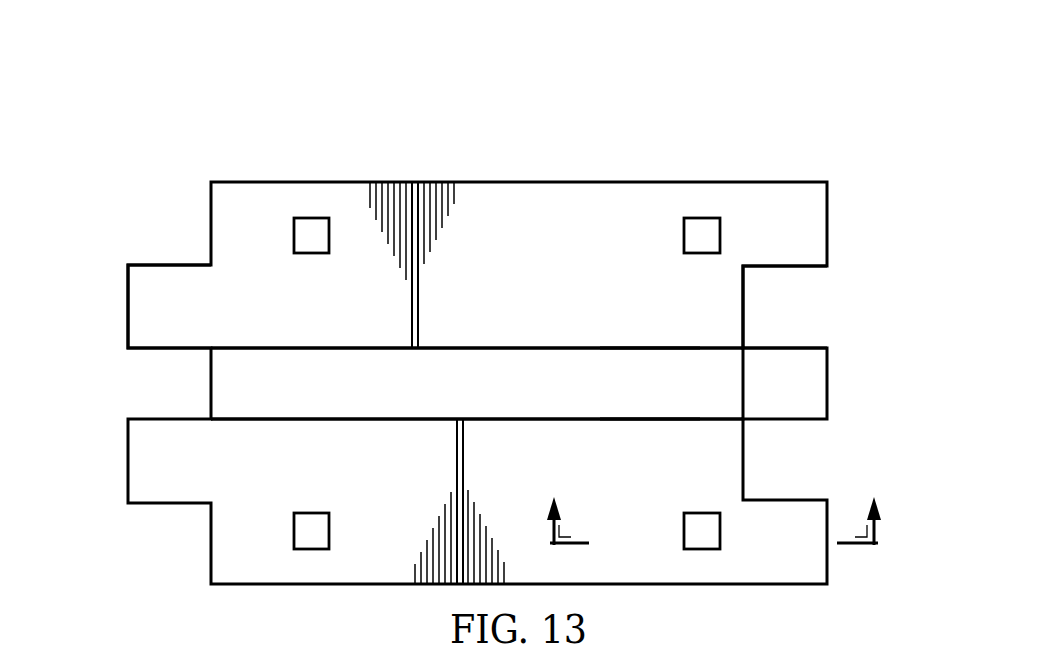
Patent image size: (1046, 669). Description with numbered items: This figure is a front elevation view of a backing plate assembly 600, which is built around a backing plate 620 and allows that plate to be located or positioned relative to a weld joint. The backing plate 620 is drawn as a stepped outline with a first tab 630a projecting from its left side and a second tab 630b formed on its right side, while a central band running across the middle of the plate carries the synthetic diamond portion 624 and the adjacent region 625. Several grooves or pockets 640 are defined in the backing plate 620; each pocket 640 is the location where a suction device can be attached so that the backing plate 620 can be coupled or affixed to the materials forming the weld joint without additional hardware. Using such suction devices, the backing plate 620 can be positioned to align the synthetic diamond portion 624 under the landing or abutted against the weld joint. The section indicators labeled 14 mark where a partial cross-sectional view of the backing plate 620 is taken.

The backing plate assembly 600 is at (701, 74).
The backing plate 620 is at (585, 182).
The synthetic diamond portion 624 is at (650, 357).
The central bar 625 is at (570, 347).
The first tab 630a is at (128, 305).
The second tab 630b is at (745, 305).
The groove or pocket 640 is at (700, 523).
The section line 14- 14 is at (715, 505).